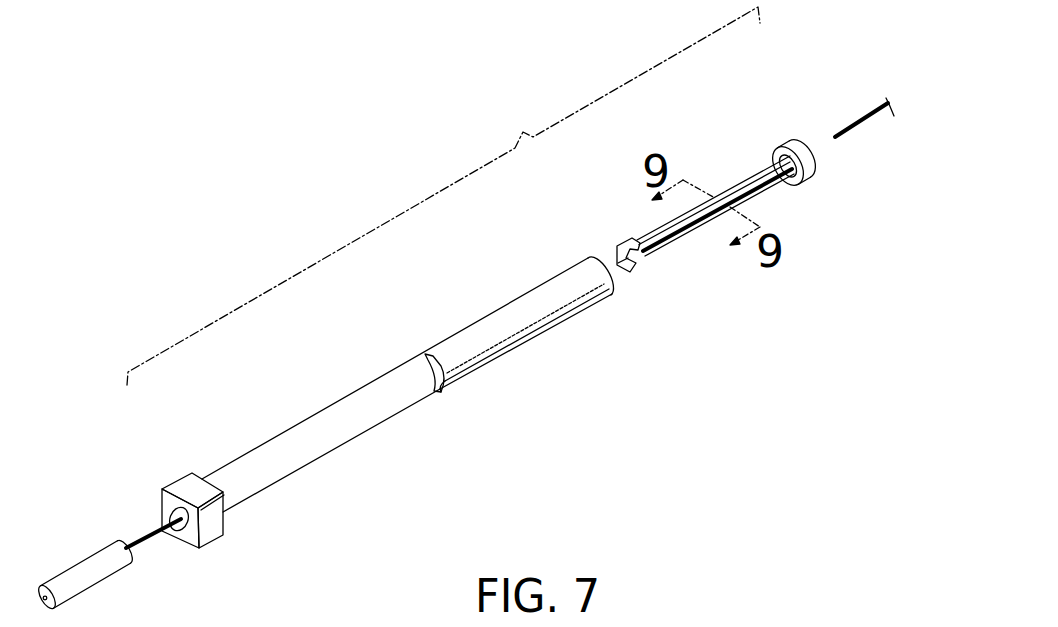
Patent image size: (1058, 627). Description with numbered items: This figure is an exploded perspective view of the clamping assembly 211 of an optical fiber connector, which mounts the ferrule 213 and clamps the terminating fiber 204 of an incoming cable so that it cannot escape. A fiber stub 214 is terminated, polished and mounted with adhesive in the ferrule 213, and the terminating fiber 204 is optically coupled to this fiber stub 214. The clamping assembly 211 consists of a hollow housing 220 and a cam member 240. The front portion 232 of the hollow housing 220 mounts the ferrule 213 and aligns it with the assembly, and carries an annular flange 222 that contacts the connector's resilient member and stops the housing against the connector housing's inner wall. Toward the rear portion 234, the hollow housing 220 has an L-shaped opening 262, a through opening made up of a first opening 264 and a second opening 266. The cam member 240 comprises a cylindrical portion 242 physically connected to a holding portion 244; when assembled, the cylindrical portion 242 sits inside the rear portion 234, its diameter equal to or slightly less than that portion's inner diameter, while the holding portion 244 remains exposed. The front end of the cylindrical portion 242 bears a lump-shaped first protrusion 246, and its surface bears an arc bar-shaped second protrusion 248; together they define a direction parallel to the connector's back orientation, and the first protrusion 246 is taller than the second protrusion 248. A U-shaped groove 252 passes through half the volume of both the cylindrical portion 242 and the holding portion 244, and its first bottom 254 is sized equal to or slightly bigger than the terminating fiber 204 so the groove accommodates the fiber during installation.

The terminating fiber 204 is at (870, 123).
The clamping assembly 211 is at (443, 196).
The ferrule 213 is at (100, 557).
The fiber stub 214 is at (153, 542).
The hollow housing 220 is at (290, 428).
The annular flange 222 is at (190, 488).
The front portion 232 is at (162, 508).
The rear portion 234 is at (515, 322).
The cam member 240 is at (738, 173).
The cylindrical portion 242 is at (753, 190).
The holding portion 244 is at (800, 150).
The first protrusion 246 is at (624, 242).
The second protrusion 248 is at (763, 167).
The U-shaped groove 252 is at (813, 173).
The first bottom 254 is at (619, 268).
The L-shaped opening 262 is at (441, 385).
The first opening 264 is at (552, 324).
The second opening 266 is at (437, 357).